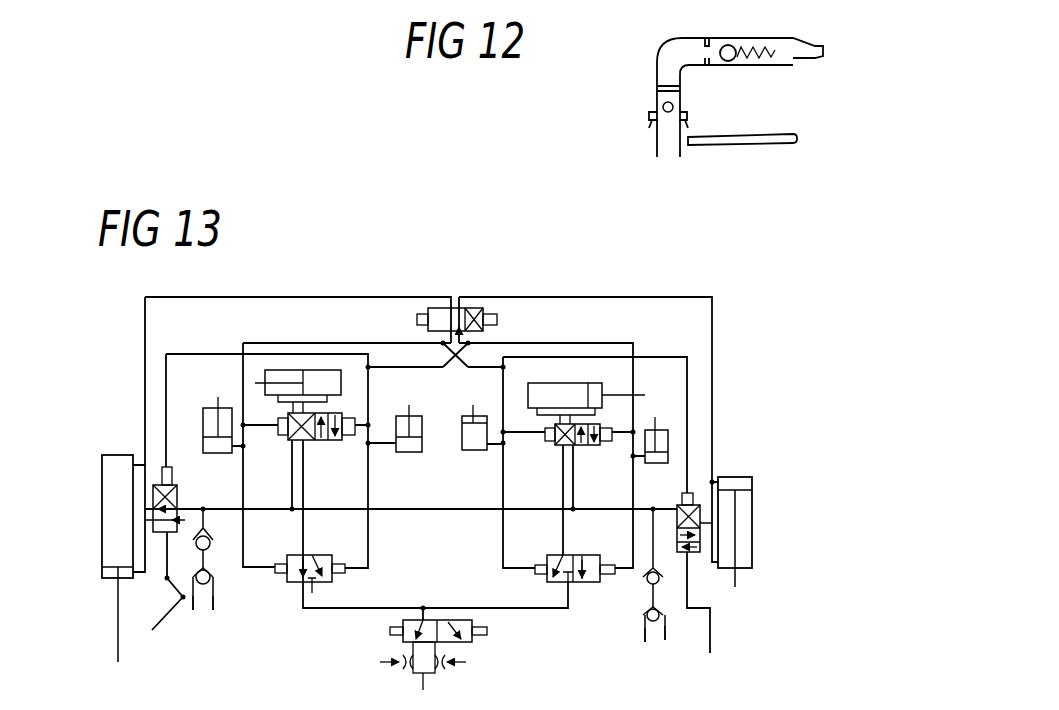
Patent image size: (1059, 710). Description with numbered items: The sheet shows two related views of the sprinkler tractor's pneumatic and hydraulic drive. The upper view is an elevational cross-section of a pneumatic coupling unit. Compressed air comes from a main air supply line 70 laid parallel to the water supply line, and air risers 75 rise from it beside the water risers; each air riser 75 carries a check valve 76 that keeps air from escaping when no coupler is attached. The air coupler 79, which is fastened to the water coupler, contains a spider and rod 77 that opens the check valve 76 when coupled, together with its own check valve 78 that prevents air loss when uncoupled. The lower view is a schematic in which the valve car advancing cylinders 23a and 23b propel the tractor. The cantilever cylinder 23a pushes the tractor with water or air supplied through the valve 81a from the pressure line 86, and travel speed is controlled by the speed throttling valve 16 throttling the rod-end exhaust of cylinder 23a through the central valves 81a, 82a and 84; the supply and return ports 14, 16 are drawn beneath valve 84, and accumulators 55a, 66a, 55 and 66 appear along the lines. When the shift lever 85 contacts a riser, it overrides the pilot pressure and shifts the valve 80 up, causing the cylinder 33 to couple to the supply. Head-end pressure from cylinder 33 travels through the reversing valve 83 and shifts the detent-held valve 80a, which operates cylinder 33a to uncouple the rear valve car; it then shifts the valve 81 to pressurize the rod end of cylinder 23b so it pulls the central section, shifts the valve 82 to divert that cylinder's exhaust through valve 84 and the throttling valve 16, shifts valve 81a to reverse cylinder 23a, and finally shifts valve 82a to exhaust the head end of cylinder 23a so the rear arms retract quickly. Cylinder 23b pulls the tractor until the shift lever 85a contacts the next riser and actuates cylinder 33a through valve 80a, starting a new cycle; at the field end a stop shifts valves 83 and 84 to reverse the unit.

In FIG. 13, the supply conduit 14 is at (440, 675).
In FIG. 13, the speed throttling valve 16 is at (406, 672).
In FIG. 13, the cantilever cylinder 23a is at (343, 388).
In FIG. 13, the valve car advancing cylinder 23b is at (564, 380).
In FIG. 13, the cylinder 33 is at (755, 515).
In FIG. 13, the cylinder 33a is at (95, 563).
In FIG. 13, the accumulator 55 is at (483, 452).
In FIG. 13, the accumulator 55a is at (203, 446).
In FIG. 13, the accumulator 66 is at (663, 464).
In FIG. 13, the accumulator 66a is at (410, 453).
In FIG. 12, the main air supply line 70 is at (767, 135).
In FIG. 12, the air riser 75 is at (683, 153).
In FIG. 13, the air riser 75 is at (218, 606).
In FIG. 12, the check valve 76 is at (673, 104).
In FIG. 13, the check valve 76 is at (214, 578).
In FIG. 12, the spider and rod 77 is at (657, 97).
In FIG. 12, the check valve 78 is at (735, 46).
In FIG. 13, the check valve 78 is at (210, 542).
In FIG. 12, the air coupler 79 is at (657, 68).
In FIG. 13, the valve 80 is at (695, 557).
In FIG. 13, the valve 80a is at (179, 497).
In FIG. 13, the valve 81 is at (558, 447).
In FIG. 13, the valve 81a is at (323, 442).
In FIG. 13, the valve 82 is at (578, 553).
In FIG. 13, the valve 82a is at (326, 551).
In FIG. 13, the reversing valve 83 is at (417, 318).
In FIG. 13, the valve 84 is at (398, 636).
In FIG. 13, the shift lever 85 is at (710, 637).
In FIG. 13, the shift lever 85a is at (170, 620).
In FIG. 13, the pressure line 86 is at (468, 512).